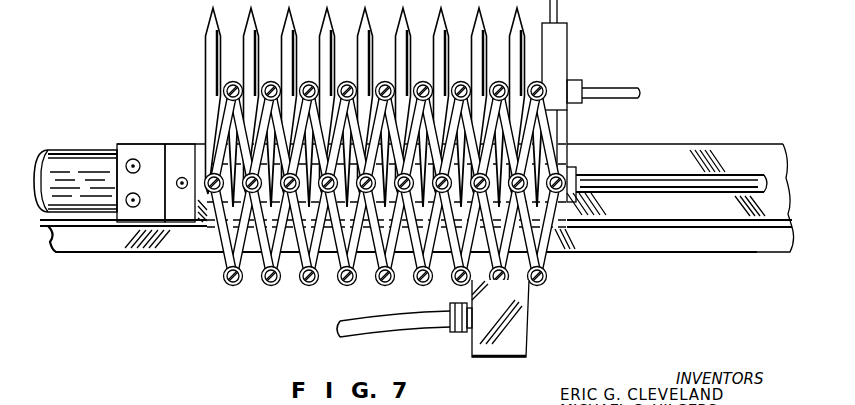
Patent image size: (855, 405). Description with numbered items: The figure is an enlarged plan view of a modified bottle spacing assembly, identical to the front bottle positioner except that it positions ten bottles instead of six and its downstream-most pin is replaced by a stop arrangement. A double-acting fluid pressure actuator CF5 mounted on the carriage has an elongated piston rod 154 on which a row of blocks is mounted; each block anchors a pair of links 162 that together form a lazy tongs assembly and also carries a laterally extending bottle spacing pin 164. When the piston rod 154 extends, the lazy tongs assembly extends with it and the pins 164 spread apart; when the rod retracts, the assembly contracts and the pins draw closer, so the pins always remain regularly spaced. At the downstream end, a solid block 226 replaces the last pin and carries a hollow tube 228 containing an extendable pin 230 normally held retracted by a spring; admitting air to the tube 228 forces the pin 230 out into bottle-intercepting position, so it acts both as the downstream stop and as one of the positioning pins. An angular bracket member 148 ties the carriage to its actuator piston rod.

The angular bracket member 148 is at (519, 307).
The piston rod 154 is at (693, 178).
The link 162 is at (358, 158).
The bottle spacing pin 164 is at (206, 41).
The solid block 226 is at (566, 119).
The hollow tube 228 is at (558, 53).
The extendable pin 230 is at (558, 13).
The fluid pressure actuator CF5 is at (117, 163).